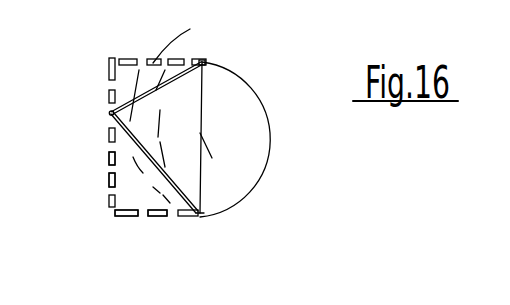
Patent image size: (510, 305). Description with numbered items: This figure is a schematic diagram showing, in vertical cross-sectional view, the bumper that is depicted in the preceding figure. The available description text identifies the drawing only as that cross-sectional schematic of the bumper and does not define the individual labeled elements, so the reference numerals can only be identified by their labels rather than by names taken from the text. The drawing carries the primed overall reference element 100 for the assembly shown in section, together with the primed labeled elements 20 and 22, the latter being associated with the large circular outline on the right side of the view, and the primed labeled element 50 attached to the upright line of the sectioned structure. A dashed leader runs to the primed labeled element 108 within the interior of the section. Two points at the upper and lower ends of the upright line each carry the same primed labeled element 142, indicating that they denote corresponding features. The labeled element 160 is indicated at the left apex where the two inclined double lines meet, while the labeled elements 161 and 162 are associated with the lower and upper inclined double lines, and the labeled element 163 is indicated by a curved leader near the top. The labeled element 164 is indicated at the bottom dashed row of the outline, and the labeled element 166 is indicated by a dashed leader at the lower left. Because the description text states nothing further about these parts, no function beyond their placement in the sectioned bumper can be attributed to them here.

The folding support assembly 100 is at (128, 78).
The housing 20 is at (103, 157).
The circular wheel member 22 is at (322, 191).
The vertical strut 50 is at (266, 132).
The swing path 108 is at (257, 95).
The pivot joints 142 is at (276, 29).
The apex pivot 160 is at (102, 112).
The lower arm 161 is at (176, 191).
The upper arm 162 is at (143, 84).
The arm path 163 is at (171, 66).
The base rail 164 is at (158, 218).
The arc path 166 is at (141, 183).